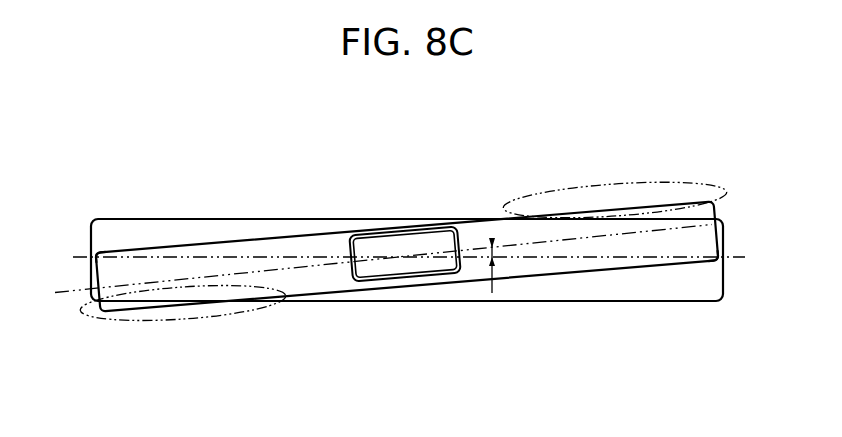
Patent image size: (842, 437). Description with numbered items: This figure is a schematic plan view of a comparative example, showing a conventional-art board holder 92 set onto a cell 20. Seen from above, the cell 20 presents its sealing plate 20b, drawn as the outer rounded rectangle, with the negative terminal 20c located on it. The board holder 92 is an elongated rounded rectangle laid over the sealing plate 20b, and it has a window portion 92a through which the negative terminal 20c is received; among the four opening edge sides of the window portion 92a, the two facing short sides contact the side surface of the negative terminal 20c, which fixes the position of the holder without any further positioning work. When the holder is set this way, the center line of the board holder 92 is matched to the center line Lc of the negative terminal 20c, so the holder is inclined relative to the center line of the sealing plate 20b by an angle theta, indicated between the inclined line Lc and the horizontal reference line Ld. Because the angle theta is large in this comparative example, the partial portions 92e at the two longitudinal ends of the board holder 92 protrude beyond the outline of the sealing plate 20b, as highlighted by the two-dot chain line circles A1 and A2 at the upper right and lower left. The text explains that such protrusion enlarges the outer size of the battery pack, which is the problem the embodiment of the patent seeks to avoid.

The cell 20 is at (705, 287).
The sealing plate 20b is at (653, 296).
The negative terminal 20c is at (407, 263).
The board holder 92 is at (532, 265).
The window portion 92a is at (372, 232).
The partial portions 92e is at (703, 209).
The center line of the negative terminal Lc is at (561, 239).
The reference axis of housing Ld is at (587, 259).
The angle theta is at (501, 270).
The circle A1 is at (610, 189).
The circle A2 is at (204, 318).